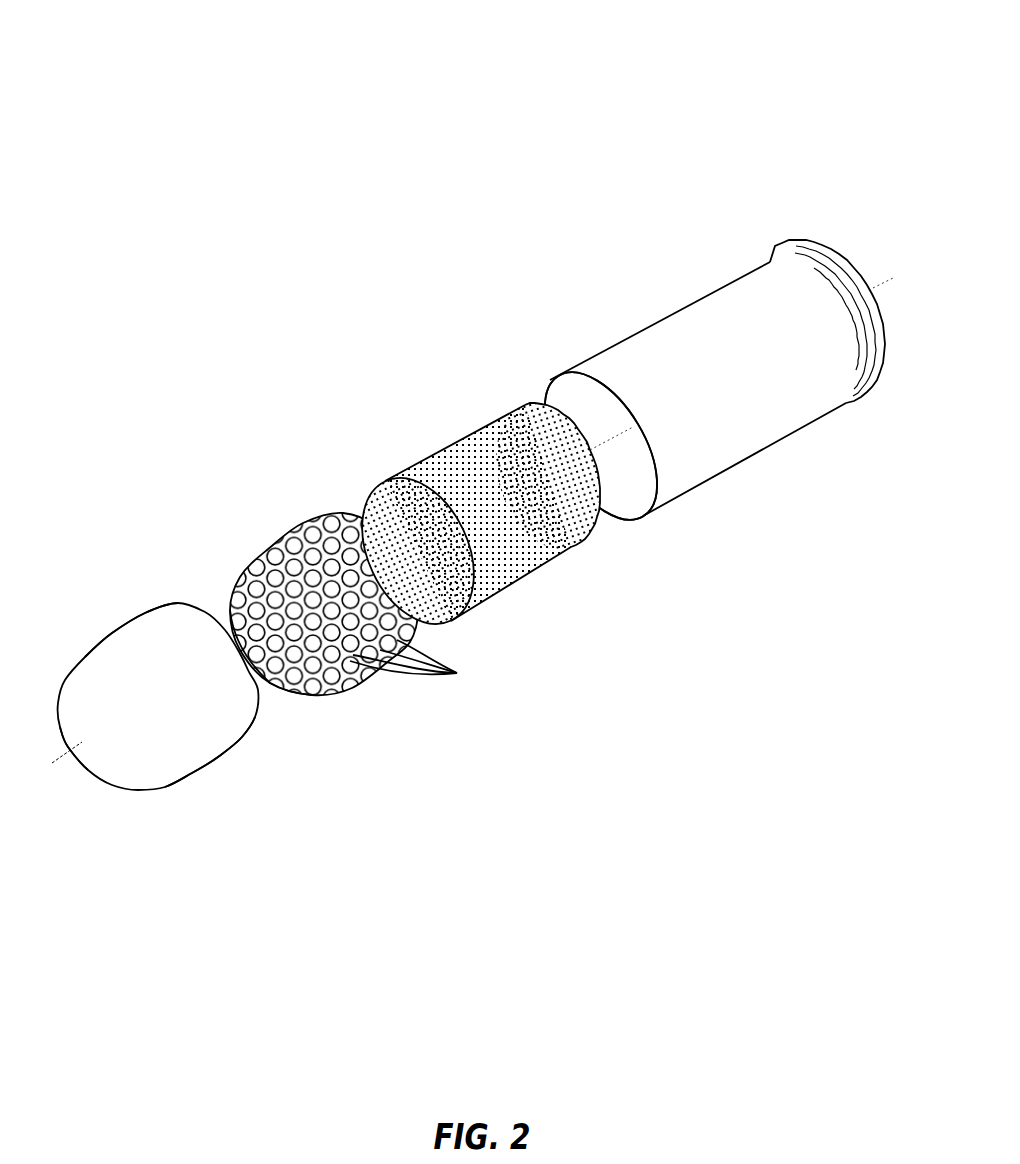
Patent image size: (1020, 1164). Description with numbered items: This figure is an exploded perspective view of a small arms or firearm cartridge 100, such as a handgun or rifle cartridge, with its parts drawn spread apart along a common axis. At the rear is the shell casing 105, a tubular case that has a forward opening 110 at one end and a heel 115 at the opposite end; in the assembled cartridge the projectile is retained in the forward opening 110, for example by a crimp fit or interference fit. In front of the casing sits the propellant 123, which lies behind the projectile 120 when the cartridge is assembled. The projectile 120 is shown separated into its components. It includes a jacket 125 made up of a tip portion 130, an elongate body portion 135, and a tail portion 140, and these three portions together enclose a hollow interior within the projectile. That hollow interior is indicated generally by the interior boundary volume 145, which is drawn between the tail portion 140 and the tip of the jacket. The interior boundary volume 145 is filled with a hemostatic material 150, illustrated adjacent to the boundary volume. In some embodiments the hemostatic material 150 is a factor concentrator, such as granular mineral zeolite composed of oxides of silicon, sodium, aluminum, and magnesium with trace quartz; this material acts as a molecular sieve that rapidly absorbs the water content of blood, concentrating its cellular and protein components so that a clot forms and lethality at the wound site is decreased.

The cartridge 100 is at (303, 135).
The shell casing 105 is at (660, 320).
The forward opening 110 is at (592, 403).
The heel 115 is at (858, 248).
The projectile 120 is at (158, 558).
The propellant 123 is at (433, 456).
The jacket 125 is at (115, 638).
The tip portion 130 is at (70, 778).
The elongate body portion 135 is at (217, 762).
The tail portion 140 is at (277, 697).
The interior boundary volume 145 is at (280, 522).
The hemostatic material 150 is at (431, 663).